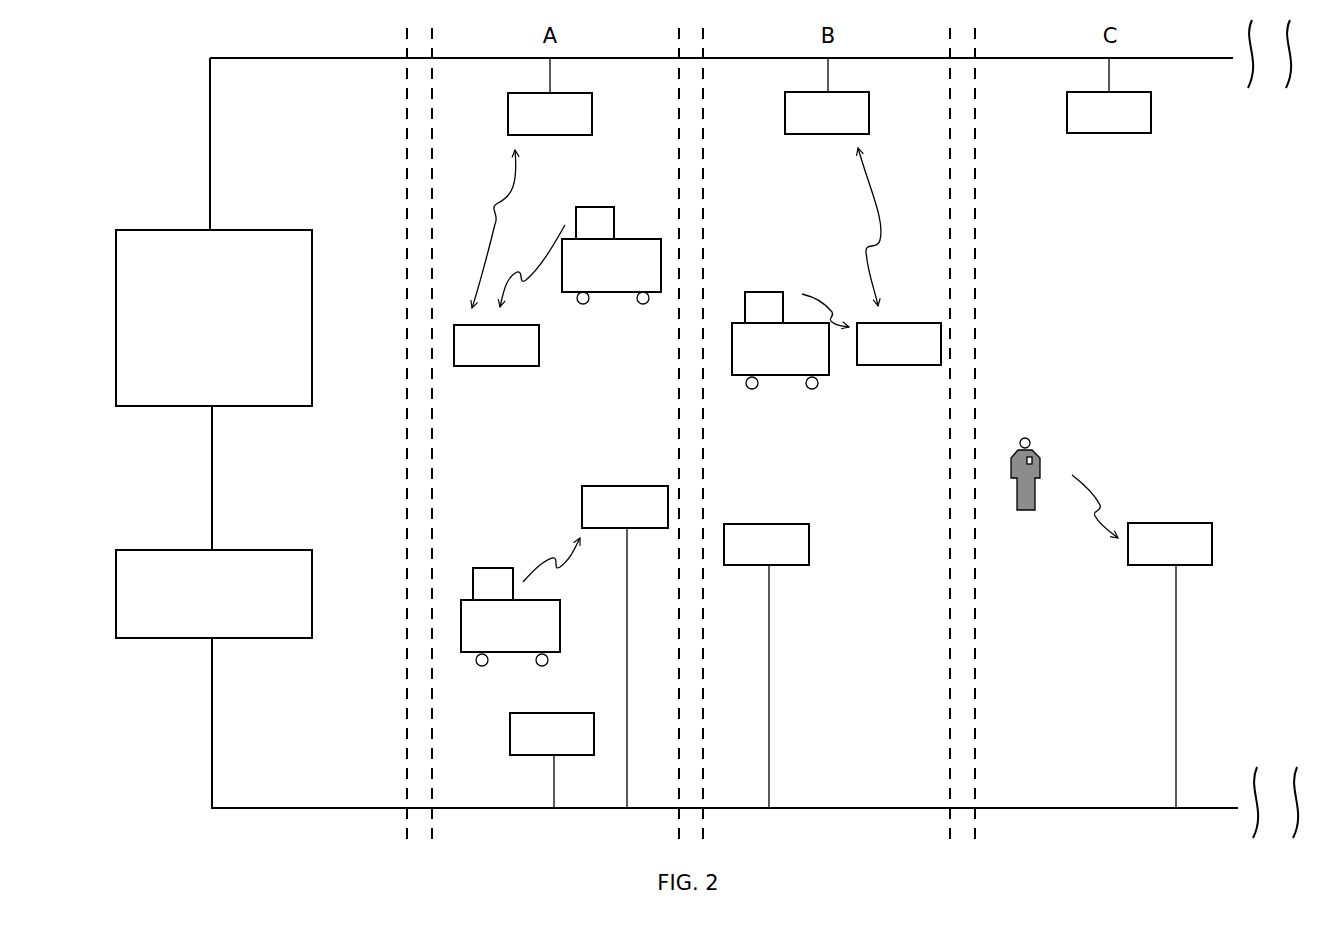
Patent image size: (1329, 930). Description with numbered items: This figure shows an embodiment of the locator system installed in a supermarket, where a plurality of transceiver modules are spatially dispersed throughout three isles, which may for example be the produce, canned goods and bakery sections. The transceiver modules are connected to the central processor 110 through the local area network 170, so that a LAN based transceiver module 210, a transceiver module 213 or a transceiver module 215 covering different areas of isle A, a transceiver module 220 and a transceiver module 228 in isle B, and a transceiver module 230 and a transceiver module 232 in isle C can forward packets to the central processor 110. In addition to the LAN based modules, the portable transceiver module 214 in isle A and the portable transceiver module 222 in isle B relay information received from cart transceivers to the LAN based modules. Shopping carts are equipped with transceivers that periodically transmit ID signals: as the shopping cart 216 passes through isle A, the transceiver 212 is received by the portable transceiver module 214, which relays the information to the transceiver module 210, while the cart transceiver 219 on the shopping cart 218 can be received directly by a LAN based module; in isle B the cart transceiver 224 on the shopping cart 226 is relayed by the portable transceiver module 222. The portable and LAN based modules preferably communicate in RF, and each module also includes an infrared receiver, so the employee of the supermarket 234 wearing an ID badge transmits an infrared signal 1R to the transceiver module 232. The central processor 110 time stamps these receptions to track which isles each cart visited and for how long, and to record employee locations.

The central processor 110 is at (116, 300).
The local area network 170 is at (116, 589).
The transceiver module 210 is at (592, 112).
The transceiver 212 is at (601, 205).
The transceiver module 213 is at (628, 484).
The portable transceiver module 214 is at (465, 366).
The transceiver module 215 is at (573, 712).
The shopping cart 216 is at (662, 290).
The vehicle 218 is at (560, 625).
The cart transceiver 219 is at (482, 567).
The terminal module (TM) in area B 220 is at (869, 111).
The portable transceiver module 222 is at (895, 365).
The cart transceiver 224 is at (745, 306).
The vehicle 226 is at (735, 373).
The terminal module (TM) 228 is at (809, 535).
The terminal module (TM) in area C 230 is at (1151, 112).
The transceiver module 232 is at (1207, 521).
The employee of the supermarket 234 is at (1003, 446).
The wireless signal from person to terminal module 1R is at (1099, 506).